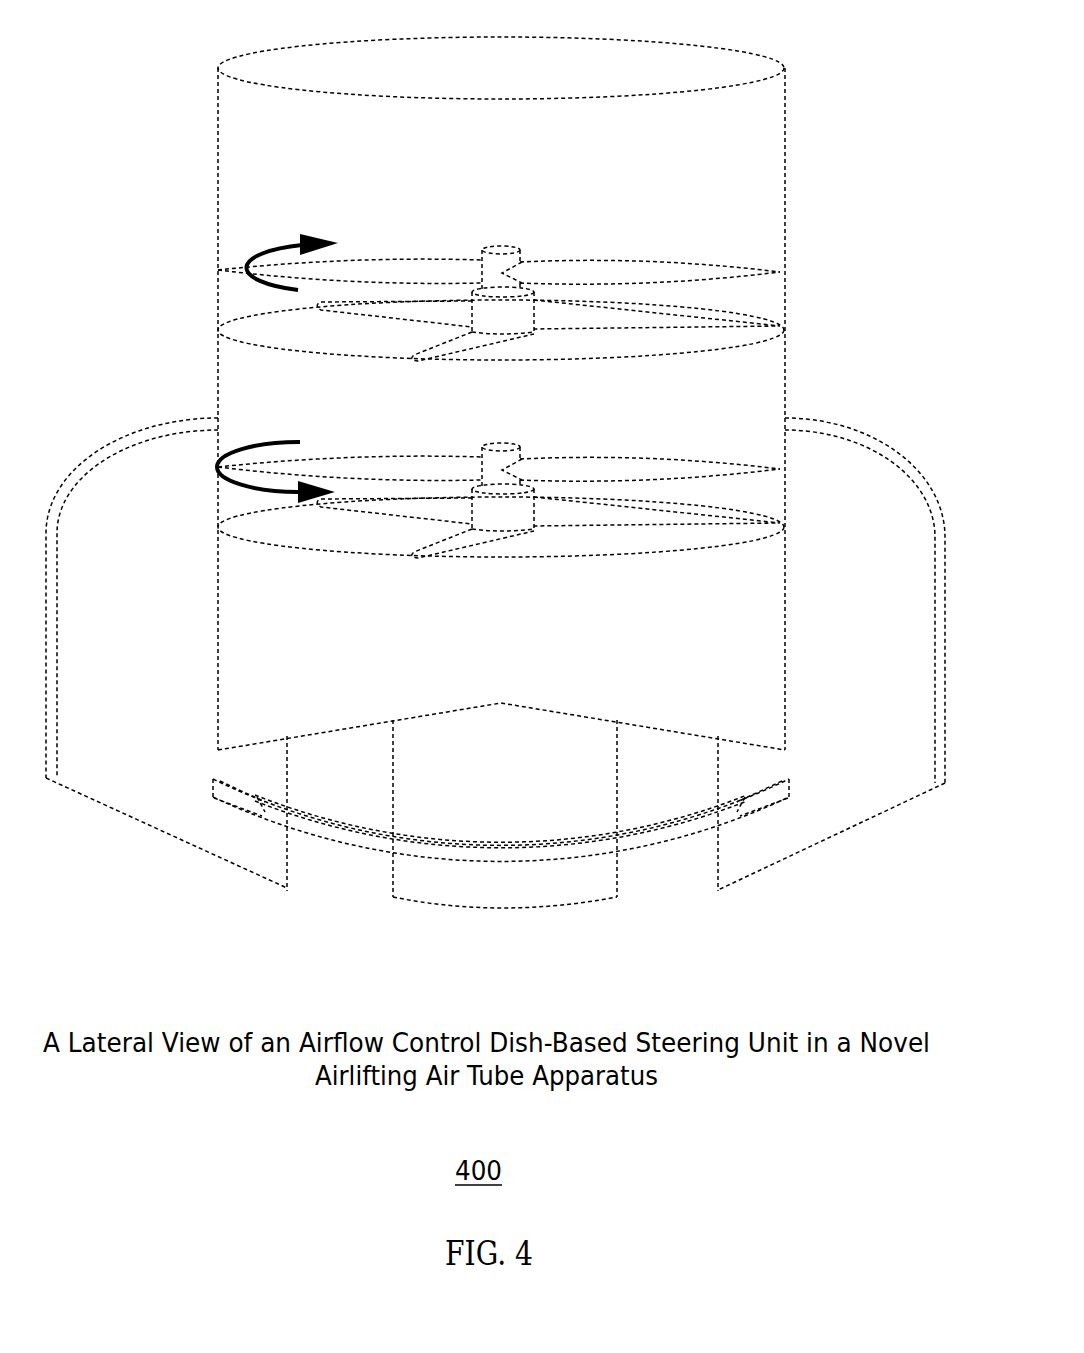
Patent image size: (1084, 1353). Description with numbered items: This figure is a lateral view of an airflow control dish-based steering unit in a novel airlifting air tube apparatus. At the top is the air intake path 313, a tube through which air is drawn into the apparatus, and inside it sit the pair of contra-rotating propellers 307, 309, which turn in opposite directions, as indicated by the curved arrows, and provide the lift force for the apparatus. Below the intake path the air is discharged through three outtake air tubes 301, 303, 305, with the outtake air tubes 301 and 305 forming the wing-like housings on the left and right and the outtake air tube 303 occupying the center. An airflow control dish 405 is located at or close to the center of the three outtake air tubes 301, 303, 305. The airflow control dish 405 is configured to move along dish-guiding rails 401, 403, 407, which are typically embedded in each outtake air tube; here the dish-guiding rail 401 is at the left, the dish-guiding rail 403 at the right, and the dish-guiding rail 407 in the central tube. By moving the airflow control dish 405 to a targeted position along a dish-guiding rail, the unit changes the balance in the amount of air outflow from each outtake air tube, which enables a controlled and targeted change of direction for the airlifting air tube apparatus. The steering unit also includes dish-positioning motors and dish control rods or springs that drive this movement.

The air intake path 313 is at (213, 122).
The contra-rotating propeller 309 is at (501, 275).
The contra-rotating propeller 307 is at (500, 481).
The outtake air tube 301 is at (168, 505).
The outtake air tube 305 is at (855, 515).
The outtake air tube 303 is at (502, 813).
The dish-guiding rail 401 is at (228, 814).
The dish-guiding rail 403 is at (772, 817).
The airflow control dish 405 is at (492, 863).
The dish-guiding rail 407 is at (570, 873).